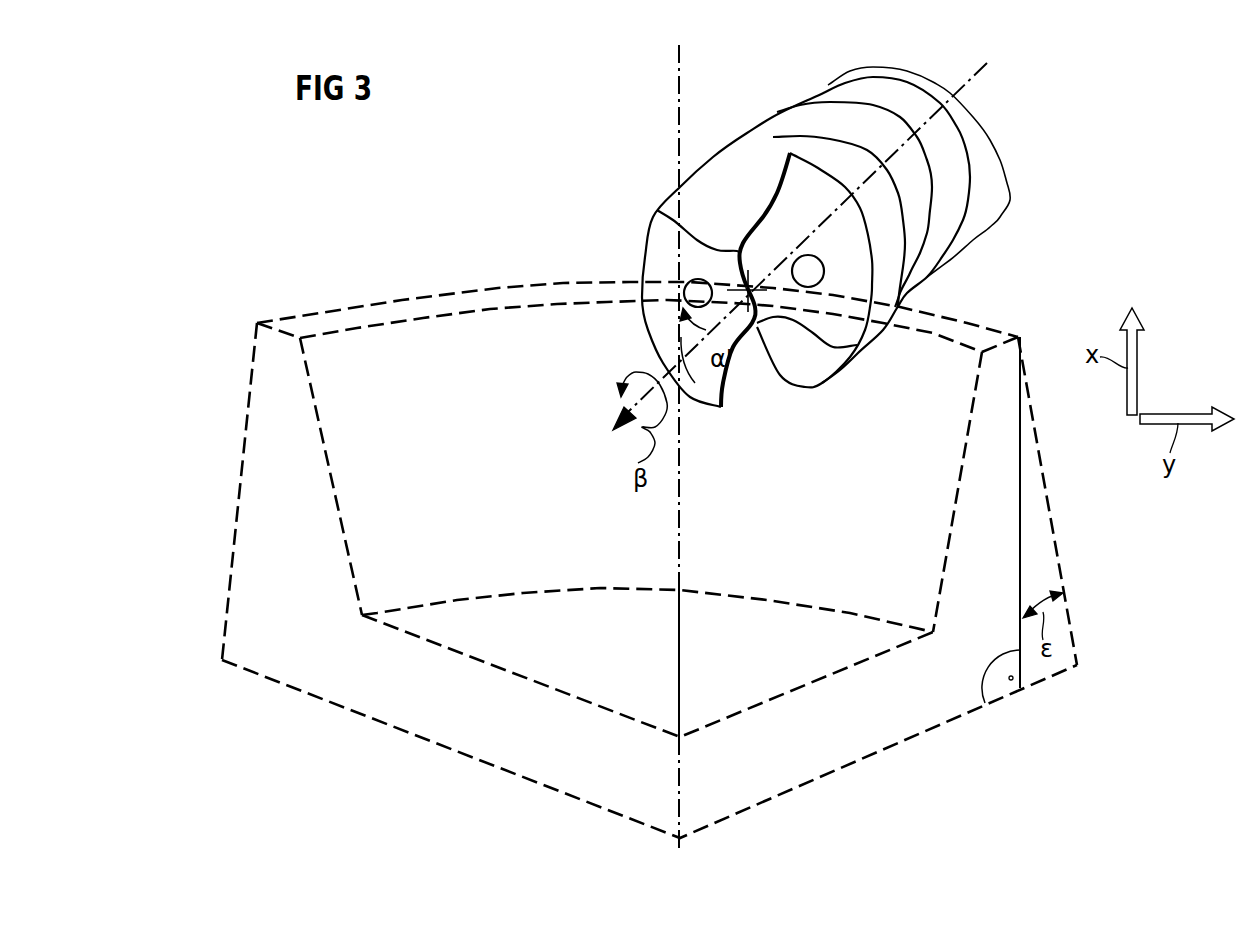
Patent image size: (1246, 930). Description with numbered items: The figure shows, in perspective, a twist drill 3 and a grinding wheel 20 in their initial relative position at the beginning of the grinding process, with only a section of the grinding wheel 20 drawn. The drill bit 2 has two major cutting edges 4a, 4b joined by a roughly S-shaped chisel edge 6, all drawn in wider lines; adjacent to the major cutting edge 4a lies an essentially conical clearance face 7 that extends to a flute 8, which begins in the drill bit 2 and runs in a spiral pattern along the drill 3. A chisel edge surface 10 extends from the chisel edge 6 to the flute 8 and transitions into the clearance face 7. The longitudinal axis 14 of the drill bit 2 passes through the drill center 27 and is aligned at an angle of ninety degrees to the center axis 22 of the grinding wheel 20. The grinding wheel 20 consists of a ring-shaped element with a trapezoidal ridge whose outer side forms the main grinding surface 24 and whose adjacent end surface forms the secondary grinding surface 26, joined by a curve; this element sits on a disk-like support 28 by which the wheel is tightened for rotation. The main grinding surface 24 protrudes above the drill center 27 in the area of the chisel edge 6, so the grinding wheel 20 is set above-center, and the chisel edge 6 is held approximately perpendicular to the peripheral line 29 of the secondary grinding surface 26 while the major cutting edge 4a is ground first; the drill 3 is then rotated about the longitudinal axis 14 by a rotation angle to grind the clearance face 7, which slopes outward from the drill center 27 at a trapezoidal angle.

The drill bit 2 is at (872, 366).
The twist drill 3 is at (760, 83).
The major cutting edge 4a is at (727, 383).
The major cutting edge 4b is at (767, 207).
The chisel edge 6 is at (733, 270).
The clearance face 7 is at (802, 197).
The flute 8 is at (757, 162).
The chisel edge surface 10 is at (780, 320).
The longitudinal axis 14 is at (987, 63).
The grinding wheel 20 is at (332, 710).
The center axis 22 is at (675, 63).
The main grinding surface 24 is at (245, 440).
The secondary grinding surface 26 is at (402, 303).
The drill center 27 is at (742, 289).
The support 28 is at (560, 673).
The peripheral line 29 is at (498, 287).